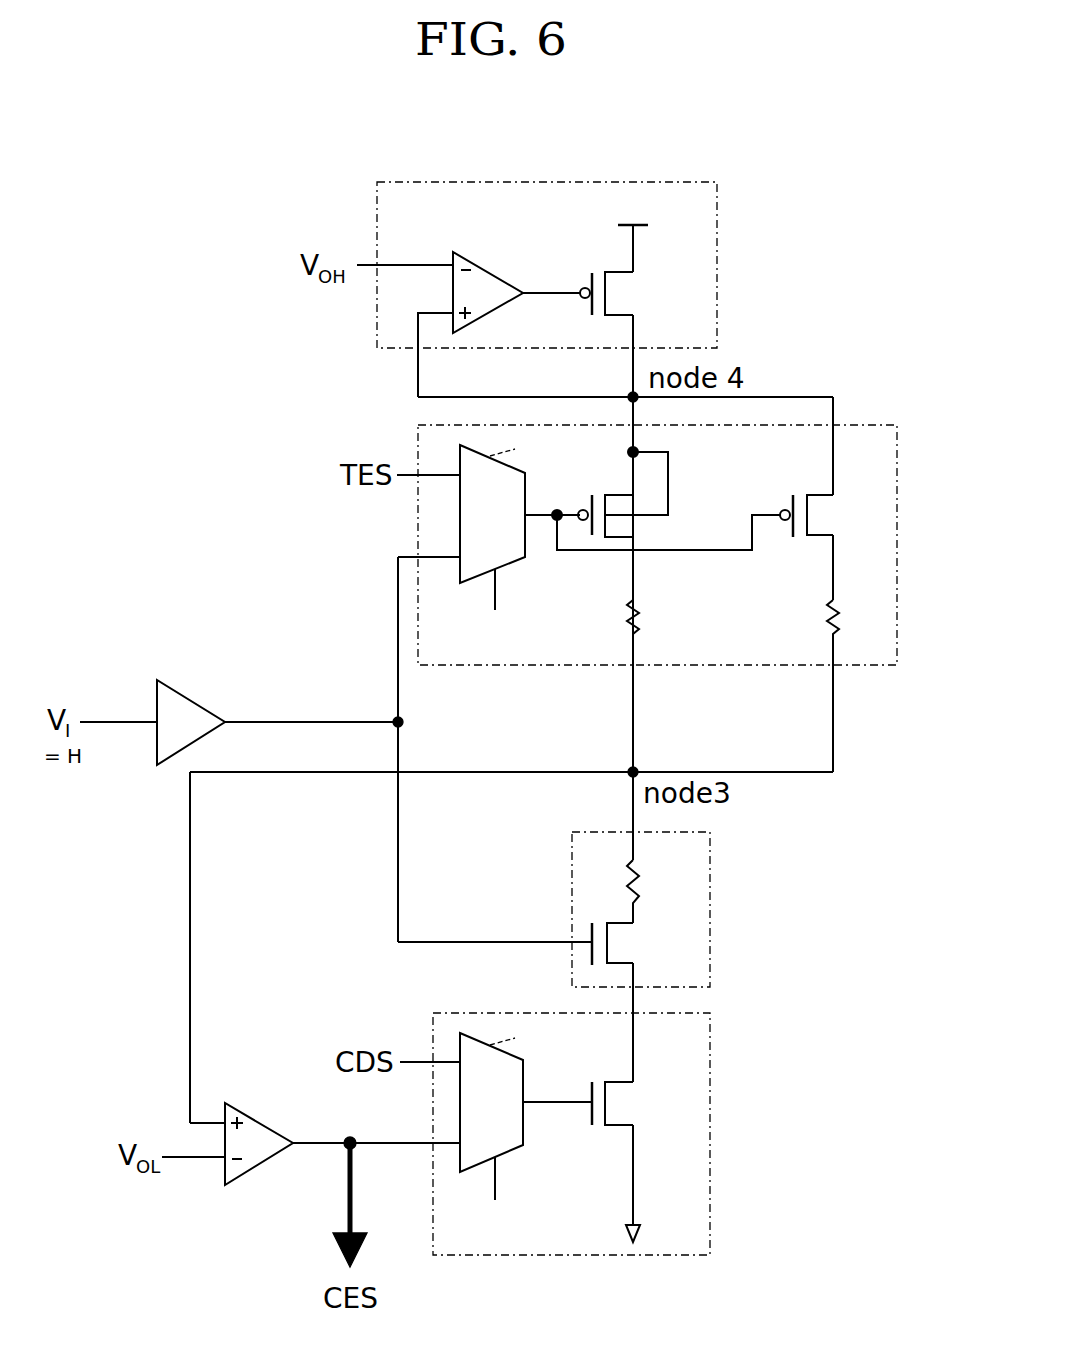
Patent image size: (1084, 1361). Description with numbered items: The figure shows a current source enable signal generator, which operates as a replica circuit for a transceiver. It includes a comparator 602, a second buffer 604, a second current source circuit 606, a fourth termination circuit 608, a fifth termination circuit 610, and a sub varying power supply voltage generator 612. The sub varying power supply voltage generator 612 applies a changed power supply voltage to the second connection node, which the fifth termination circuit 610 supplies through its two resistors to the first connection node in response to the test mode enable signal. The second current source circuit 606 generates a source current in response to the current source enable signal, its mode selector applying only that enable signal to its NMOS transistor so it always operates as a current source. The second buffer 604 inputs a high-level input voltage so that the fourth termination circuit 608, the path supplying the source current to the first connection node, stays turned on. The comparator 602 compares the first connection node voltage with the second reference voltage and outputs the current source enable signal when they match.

The comparator 602 is at (260, 1133).
The second buffer 604 is at (205, 718).
The second current source circuit 606 is at (712, 1075).
The fourth termination circuit 608 is at (712, 862).
The fifth termination circuit 610 is at (865, 423).
The sub varying power supply voltage generator 612 is at (647, 182).